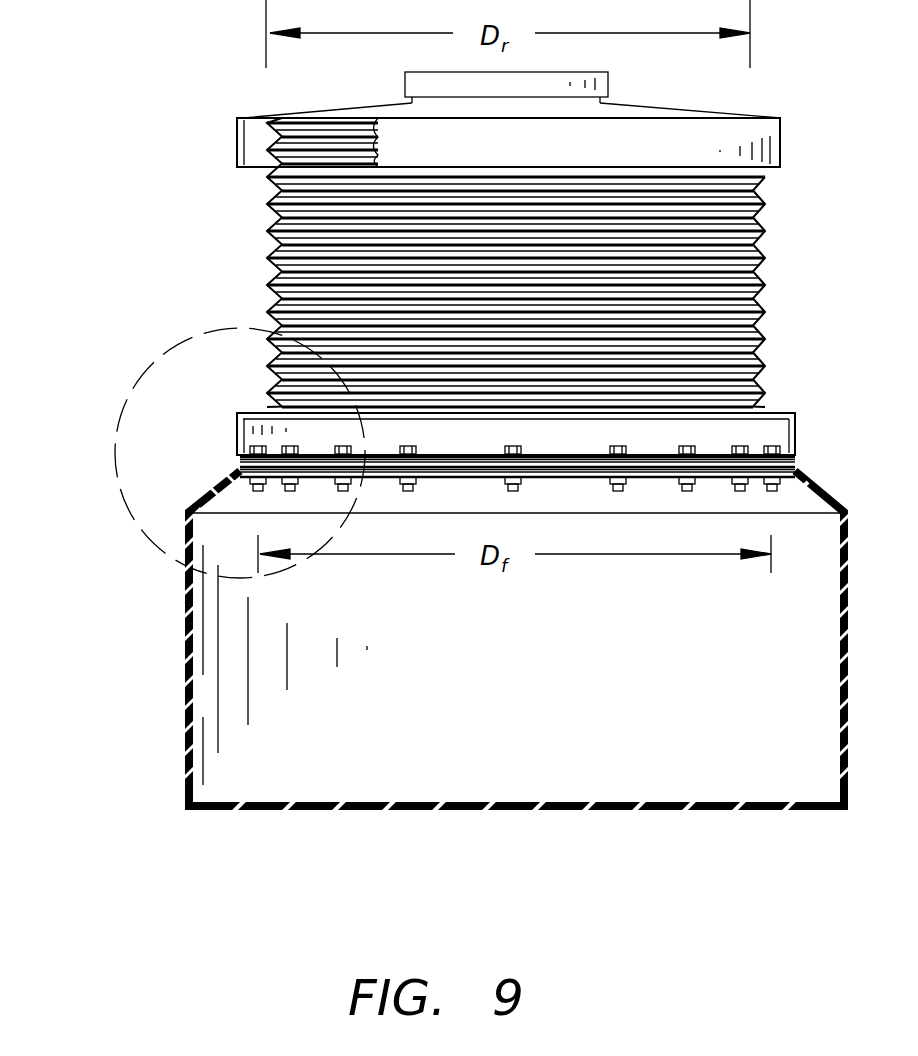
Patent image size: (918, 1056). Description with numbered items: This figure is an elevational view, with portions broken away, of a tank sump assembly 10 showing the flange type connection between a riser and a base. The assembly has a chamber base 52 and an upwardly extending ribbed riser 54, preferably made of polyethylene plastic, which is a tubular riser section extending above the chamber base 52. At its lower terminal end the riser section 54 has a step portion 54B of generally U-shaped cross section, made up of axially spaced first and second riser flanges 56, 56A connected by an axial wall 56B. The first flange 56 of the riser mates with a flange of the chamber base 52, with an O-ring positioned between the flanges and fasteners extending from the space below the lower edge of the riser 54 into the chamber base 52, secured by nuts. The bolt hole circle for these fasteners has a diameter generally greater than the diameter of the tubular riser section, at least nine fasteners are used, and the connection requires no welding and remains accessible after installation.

The expansion joint assembly 10 is at (138, 383).
The chamber base 52 is at (185, 665).
The ribbed riser 54 is at (268, 247).
The step portion 54B is at (238, 426).
The first flange 56 is at (412, 434).
The second riser flange 56A is at (268, 482).
The axial wall 56B is at (237, 465).